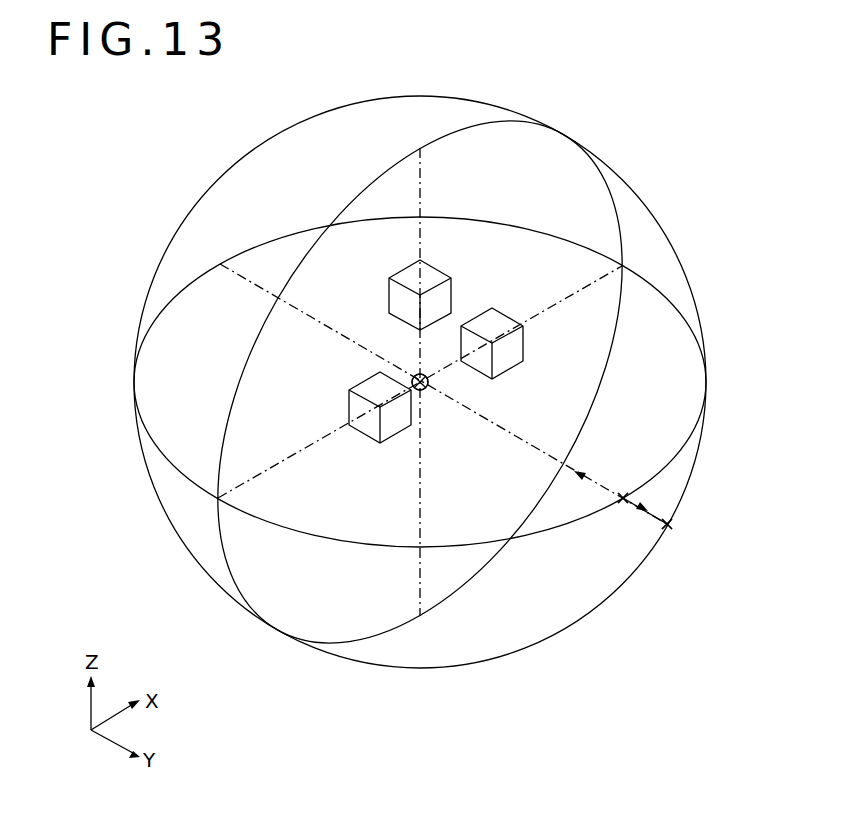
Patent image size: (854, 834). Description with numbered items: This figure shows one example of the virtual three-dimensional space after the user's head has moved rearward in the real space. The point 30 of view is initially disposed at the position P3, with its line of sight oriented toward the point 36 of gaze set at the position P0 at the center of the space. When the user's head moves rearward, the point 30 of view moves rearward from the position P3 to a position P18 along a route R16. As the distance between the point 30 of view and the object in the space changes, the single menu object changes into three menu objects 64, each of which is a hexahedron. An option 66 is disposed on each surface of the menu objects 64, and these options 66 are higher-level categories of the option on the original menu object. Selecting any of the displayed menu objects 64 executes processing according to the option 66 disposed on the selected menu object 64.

The point of view 30 is at (625, 504).
The point of gaze 36 is at (422, 394).
The menu objects 64 is at (444, 258).
The option 66 is at (452, 281).
The position P0 is at (429, 393).
The position P3 is at (620, 477).
The position P18 is at (665, 516).
The route R16 is at (660, 528).